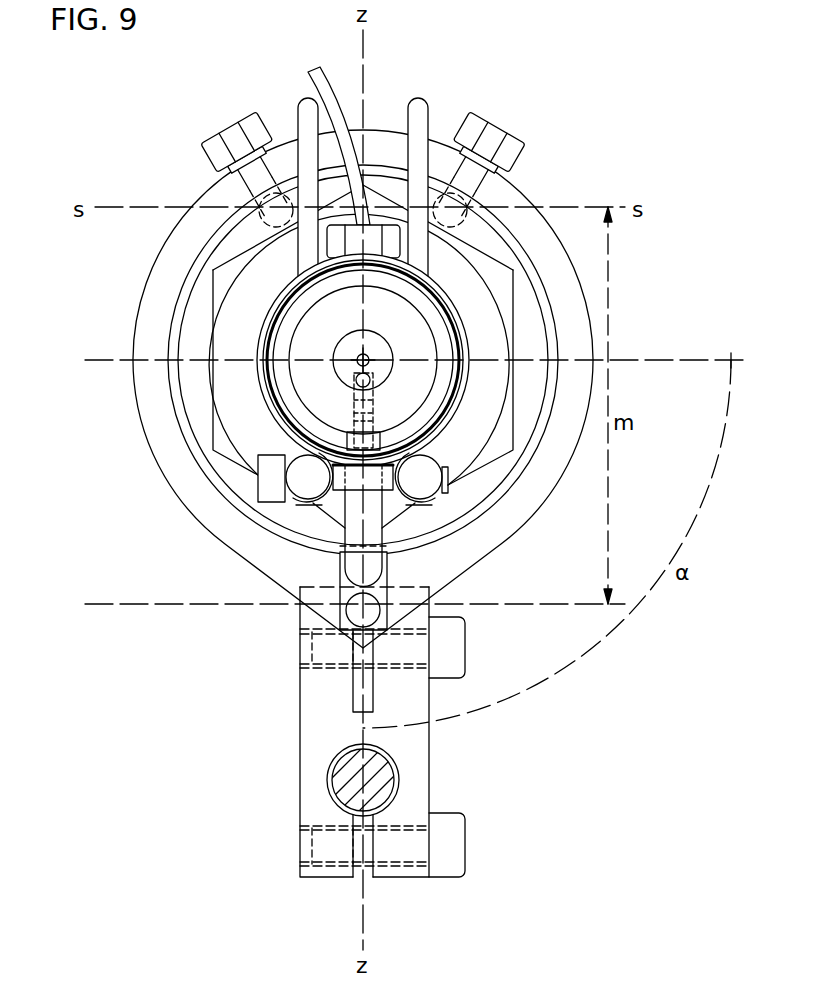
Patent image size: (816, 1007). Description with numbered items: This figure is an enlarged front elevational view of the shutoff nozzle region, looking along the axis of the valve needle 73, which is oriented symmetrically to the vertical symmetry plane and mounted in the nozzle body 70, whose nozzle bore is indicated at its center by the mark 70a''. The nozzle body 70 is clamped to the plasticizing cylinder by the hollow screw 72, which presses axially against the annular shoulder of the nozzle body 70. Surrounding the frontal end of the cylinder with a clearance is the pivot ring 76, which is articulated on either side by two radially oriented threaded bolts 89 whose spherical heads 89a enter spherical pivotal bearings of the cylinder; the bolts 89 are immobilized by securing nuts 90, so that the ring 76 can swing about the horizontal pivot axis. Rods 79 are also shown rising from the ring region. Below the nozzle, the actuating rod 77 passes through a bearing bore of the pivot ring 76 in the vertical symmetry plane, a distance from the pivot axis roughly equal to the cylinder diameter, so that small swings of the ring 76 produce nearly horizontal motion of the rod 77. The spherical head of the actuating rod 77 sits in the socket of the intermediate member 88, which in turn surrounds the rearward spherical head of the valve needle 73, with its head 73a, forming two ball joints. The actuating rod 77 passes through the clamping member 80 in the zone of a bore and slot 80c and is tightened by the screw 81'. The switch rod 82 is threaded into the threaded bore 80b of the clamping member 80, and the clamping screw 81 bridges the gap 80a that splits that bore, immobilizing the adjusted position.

The nozzle body 70 is at (290, 334).
The pivot axis center 70a'' is at (342, 340).
The hollow screw 72 is at (255, 290).
The valve needle 73 is at (350, 400).
The pin head 73a is at (382, 382).
The pivot ring 76 is at (543, 481).
The actuating rod 77 is at (347, 616).
The guide rods 79 is at (305, 112).
The clamping member 80 is at (327, 698).
The gap 80a is at (360, 868).
The threaded bore 80b is at (326, 790).
The slot 80c is at (357, 687).
The clamping screw 81 is at (407, 868).
The screw 81' is at (414, 647).
The switch rod 82 is at (395, 780).
The intermediate member 88 is at (355, 538).
The threaded bolts 89 is at (237, 183).
The spherical heads 89a is at (258, 205).
The securing nuts 90 is at (245, 148).